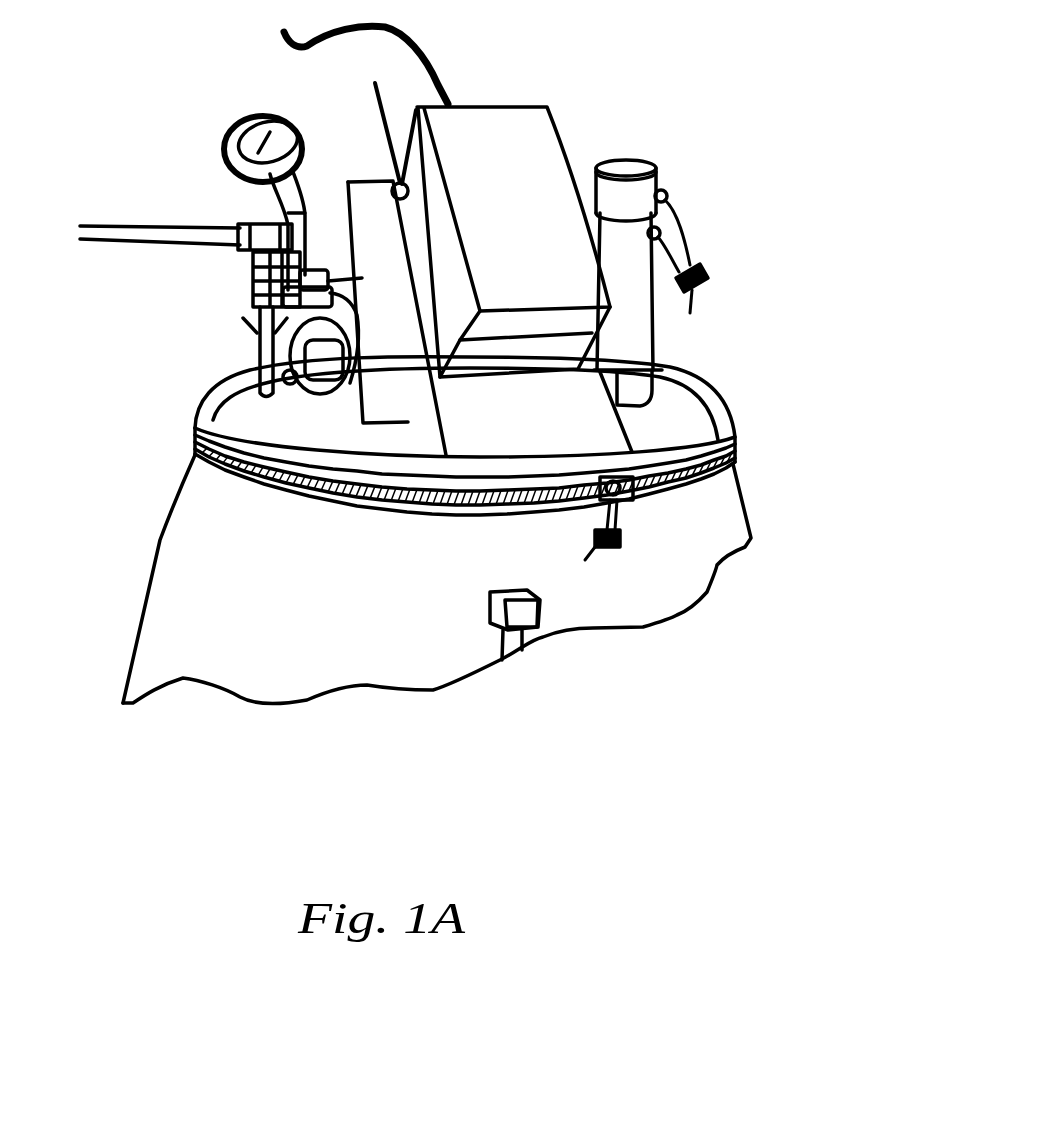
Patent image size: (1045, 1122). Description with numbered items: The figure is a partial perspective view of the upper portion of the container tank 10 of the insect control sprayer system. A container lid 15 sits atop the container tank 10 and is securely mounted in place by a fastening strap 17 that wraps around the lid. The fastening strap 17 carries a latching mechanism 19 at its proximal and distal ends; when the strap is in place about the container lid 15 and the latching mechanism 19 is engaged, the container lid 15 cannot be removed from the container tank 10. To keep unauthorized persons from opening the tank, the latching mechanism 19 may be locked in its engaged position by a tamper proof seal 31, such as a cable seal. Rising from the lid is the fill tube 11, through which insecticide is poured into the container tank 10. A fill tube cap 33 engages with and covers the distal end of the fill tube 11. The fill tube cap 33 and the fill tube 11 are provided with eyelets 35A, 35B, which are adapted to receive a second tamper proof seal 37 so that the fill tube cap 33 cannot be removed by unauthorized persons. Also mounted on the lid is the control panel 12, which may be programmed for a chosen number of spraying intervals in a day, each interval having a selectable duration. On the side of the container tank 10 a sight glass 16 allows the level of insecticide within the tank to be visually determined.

The container tank 10 is at (153, 597).
The fill tube 11 is at (652, 355).
The control panel 12 is at (520, 118).
The container lid 15 is at (212, 397).
The sight glass 16 is at (500, 628).
The fastening strap 17 is at (200, 442).
The latching mechanism 19 is at (622, 493).
The tamper proof seal 31 is at (600, 558).
The fill tube cap 33 is at (627, 170).
The eyelet 35A is at (663, 190).
The eyelet 35B is at (655, 239).
The tamper proof seal 37 is at (710, 262).